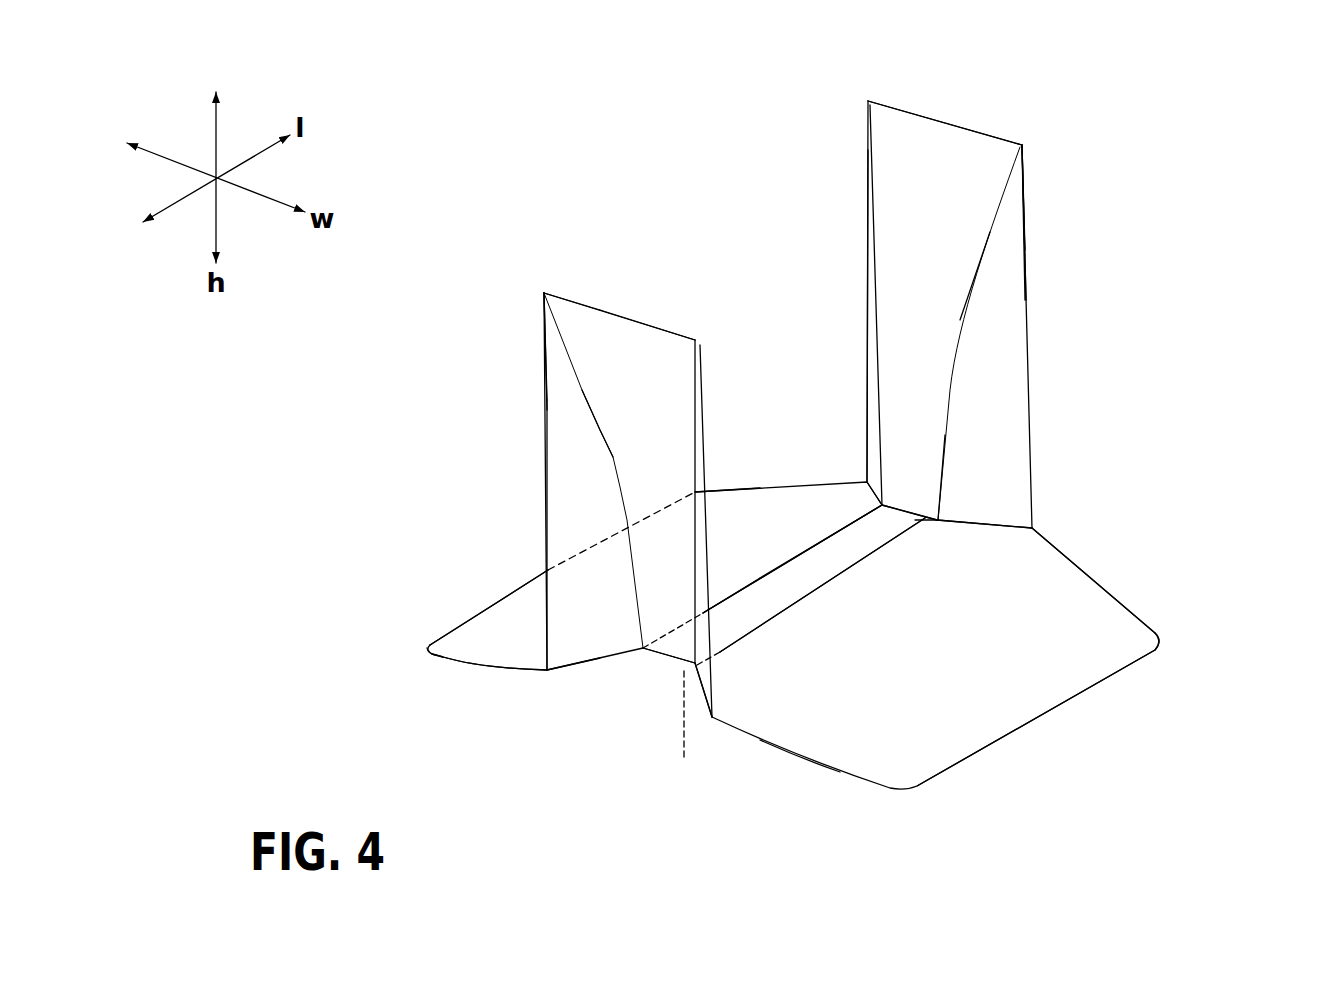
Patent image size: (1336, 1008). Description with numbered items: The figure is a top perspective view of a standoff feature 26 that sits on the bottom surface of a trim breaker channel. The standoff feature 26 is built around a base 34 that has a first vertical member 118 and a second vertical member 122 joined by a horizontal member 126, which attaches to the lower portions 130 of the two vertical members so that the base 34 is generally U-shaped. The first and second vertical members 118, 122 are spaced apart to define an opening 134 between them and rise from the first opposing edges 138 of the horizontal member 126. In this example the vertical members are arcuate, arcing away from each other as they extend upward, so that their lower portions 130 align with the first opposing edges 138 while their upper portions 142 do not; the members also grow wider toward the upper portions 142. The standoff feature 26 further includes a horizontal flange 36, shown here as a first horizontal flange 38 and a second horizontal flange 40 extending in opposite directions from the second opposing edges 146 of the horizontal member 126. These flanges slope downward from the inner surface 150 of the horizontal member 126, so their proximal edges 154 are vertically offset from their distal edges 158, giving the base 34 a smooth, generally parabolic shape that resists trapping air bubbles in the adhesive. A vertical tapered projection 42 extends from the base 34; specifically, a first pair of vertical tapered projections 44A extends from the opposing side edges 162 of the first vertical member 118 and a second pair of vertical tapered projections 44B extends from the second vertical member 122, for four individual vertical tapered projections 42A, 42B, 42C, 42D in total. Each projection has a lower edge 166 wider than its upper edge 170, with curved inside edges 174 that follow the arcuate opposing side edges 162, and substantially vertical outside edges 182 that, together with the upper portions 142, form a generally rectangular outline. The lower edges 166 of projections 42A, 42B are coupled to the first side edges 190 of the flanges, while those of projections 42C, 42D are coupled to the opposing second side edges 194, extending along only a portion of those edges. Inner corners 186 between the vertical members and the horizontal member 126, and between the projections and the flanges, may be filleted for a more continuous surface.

The standoff feature 26 is at (1058, 140).
The base 34 is at (938, 488).
The horizontal flange 36 is at (813, 902).
The first horizontal flange 38 is at (430, 645).
The second horizontal flange 40 is at (955, 740).
The vertical tapered projection 42 is at (857, 444).
The vertical tapered projection 42A is at (563, 633).
The vertical tapered projection 42B is at (712, 683).
The vertical tapered projection 42C is at (870, 252).
The vertical tapered projection 42D is at (1010, 190).
The first pair of vertical tapered projections 44A is at (526, 357).
The second pair of vertical tapered projections 44B is at (1040, 208).
The first vertical member 118 is at (623, 455).
The second vertical member 122 is at (940, 273).
The horizontal member 126 is at (738, 625).
The lower portions 130 is at (922, 505).
The opening 134 is at (810, 143).
The first opposing edges 138 is at (915, 520).
The upper portions 142 is at (618, 343).
The second opposing edges 146 is at (853, 523).
The inner surface 150 is at (897, 528).
The proximal edges 154 is at (813, 537).
The distal edges 158 is at (500, 602).
The opposing side edges 162 is at (868, 147).
The lower edge 166 is at (563, 668).
The upper edge 170 is at (546, 290).
The inside edges 174 is at (563, 342).
The outside edges 182 is at (546, 406).
The inner corners 186 is at (1010, 523).
The first side edges 190 is at (442, 657).
The second side edges 194 is at (717, 490).